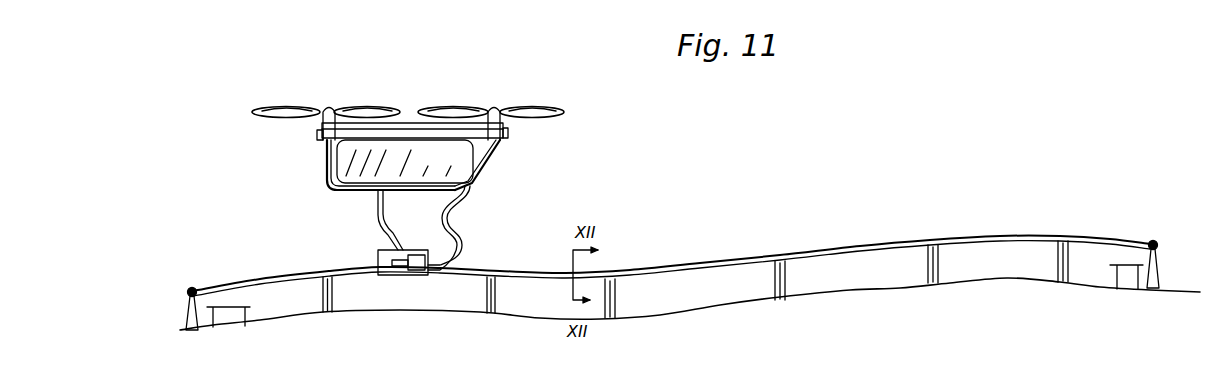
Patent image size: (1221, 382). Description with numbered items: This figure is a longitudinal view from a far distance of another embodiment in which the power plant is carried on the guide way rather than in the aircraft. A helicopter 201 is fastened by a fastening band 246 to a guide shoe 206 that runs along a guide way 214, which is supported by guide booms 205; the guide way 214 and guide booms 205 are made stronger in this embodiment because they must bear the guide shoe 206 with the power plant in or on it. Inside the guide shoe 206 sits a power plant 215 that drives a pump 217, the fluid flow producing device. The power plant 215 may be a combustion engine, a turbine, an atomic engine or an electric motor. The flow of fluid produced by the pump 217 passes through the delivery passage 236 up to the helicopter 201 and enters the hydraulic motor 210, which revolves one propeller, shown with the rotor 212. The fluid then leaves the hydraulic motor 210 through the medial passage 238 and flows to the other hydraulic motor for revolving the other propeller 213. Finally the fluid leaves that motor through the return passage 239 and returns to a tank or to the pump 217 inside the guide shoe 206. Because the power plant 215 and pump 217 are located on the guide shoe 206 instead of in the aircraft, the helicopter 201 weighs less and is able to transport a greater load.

The helicopter 201 is at (420, 156).
The guide boom 205 is at (776, 288).
The guide shoe 206 is at (378, 259).
The hydraulic motor 210 is at (322, 128).
The left rotor pair 212 is at (262, 107).
The propeller 213 is at (533, 107).
The guide way 214 is at (712, 266).
The power plant 215 is at (416, 272).
The pump 217 is at (396, 272).
The delivery passage 236 is at (325, 174).
The medial passage 238 is at (410, 123).
The return passage 239 is at (493, 148).
The fastening band 246 is at (381, 233).